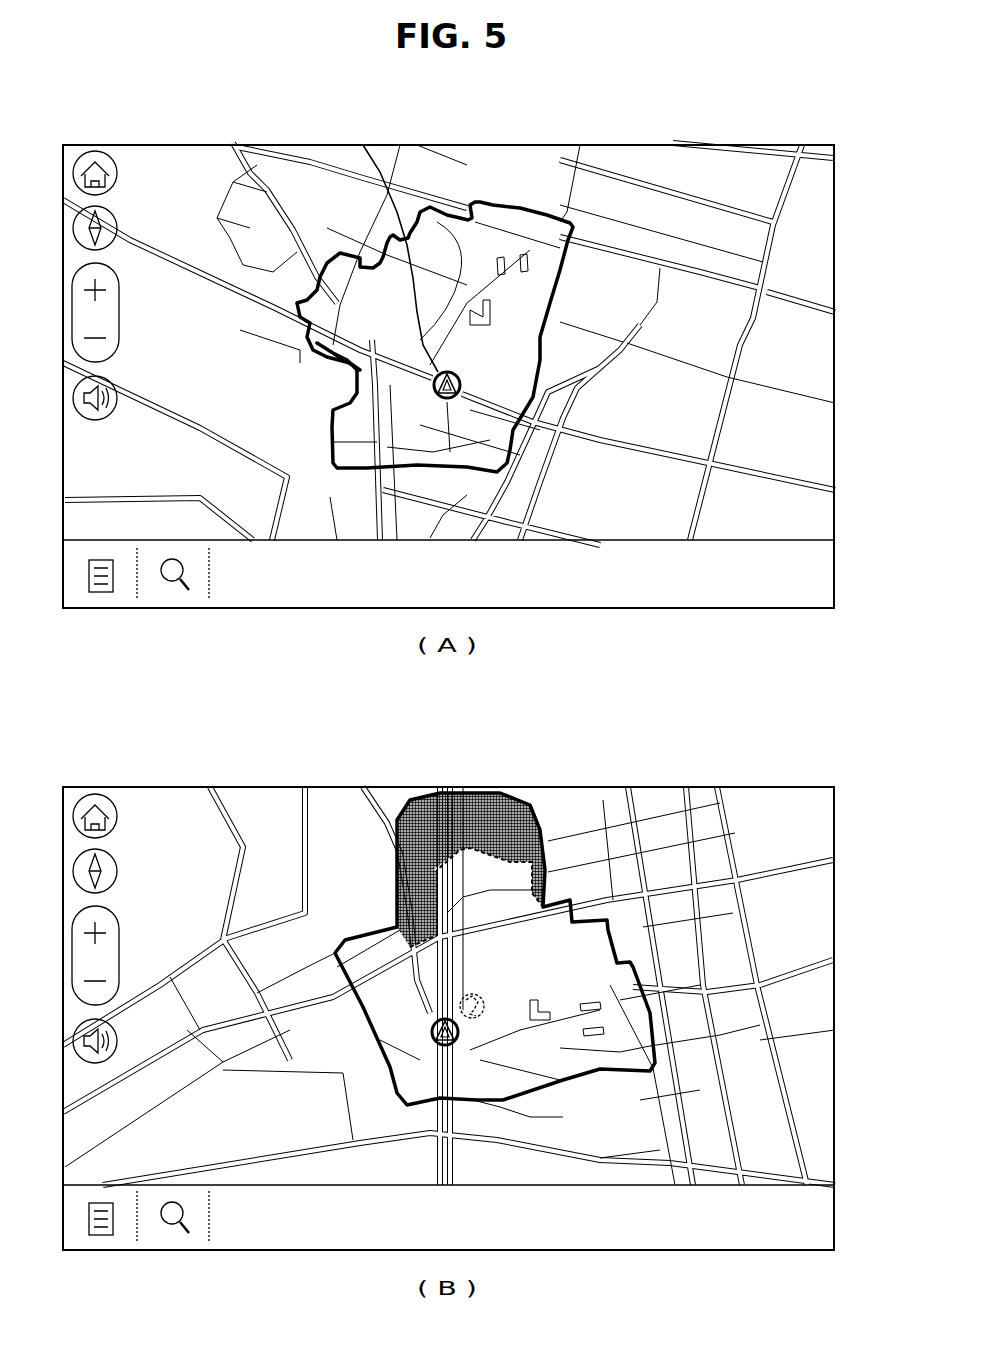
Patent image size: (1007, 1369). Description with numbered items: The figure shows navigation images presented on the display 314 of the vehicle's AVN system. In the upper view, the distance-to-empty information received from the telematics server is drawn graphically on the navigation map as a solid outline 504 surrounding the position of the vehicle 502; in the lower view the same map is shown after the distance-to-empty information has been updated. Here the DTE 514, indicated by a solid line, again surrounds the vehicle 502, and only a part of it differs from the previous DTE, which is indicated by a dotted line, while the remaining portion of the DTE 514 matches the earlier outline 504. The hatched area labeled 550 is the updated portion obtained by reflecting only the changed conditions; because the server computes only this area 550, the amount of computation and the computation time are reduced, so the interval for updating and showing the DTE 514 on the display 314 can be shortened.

The display 314 is at (660, 145).
The vehicle 502 is at (437, 372).
The service area boundary 504 is at (541, 215).
The DTE 514 is at (516, 795).
The updated portion 550 is at (427, 810).